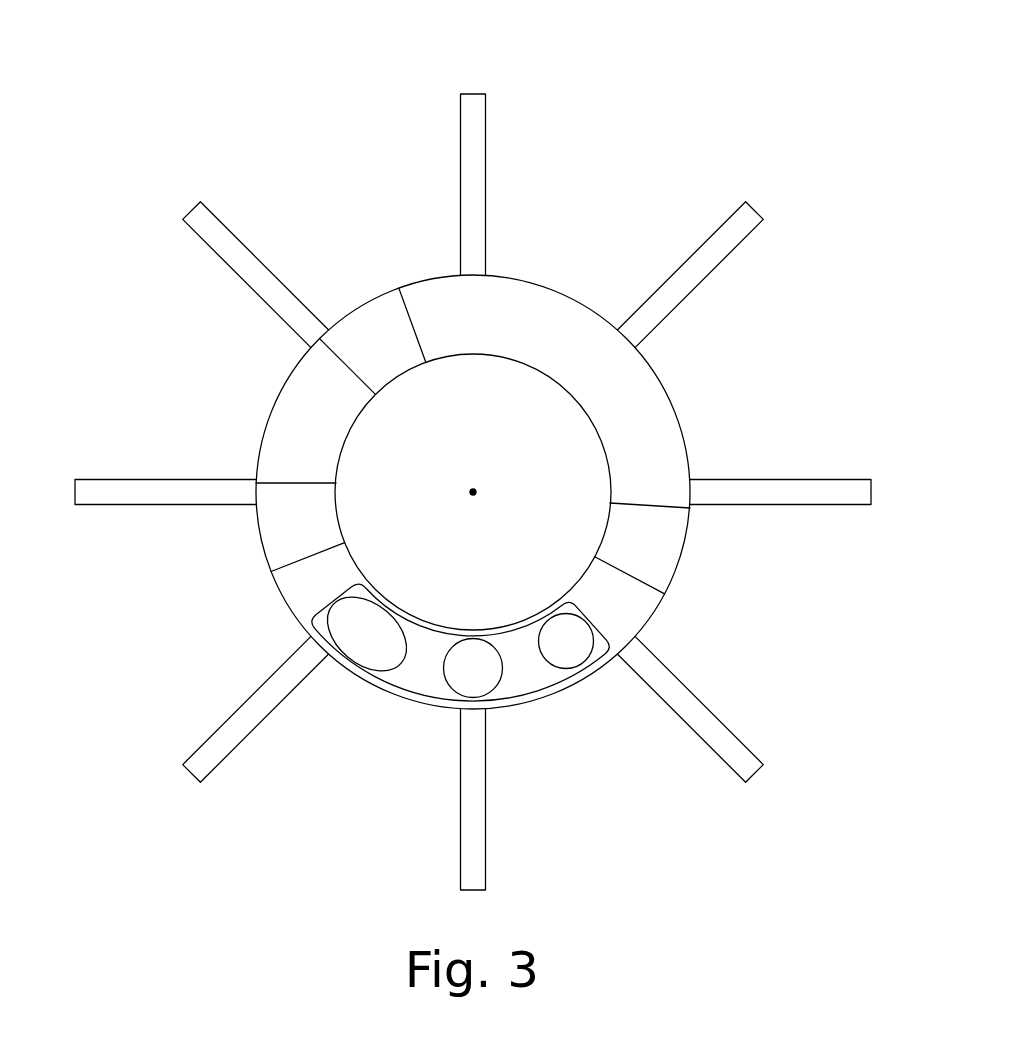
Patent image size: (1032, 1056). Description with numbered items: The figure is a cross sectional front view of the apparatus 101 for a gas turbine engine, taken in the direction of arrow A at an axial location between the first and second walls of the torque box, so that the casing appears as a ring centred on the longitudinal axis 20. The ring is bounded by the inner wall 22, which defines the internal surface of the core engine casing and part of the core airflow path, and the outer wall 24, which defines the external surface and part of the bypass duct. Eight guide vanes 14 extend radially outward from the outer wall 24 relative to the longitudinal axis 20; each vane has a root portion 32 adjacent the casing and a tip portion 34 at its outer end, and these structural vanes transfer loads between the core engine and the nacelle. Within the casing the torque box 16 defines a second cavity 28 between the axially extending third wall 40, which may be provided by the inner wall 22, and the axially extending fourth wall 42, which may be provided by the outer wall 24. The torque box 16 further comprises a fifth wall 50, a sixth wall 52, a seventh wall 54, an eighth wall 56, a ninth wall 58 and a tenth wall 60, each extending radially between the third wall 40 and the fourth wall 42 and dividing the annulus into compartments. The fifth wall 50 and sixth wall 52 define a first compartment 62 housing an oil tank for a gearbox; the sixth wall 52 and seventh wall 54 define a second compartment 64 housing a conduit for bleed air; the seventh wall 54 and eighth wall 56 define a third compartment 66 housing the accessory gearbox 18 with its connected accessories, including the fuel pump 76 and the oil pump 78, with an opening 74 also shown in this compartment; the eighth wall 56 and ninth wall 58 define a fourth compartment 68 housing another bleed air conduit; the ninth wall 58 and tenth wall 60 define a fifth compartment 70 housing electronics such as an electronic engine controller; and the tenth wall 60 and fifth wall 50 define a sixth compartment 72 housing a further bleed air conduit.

The apparatus 101 is at (683, 93).
The guide vanes 14 is at (487, 170).
The torque box 16 is at (693, 555).
The accessory gearbox 18 is at (422, 678).
The longitudinal axis 20 is at (474, 497).
The inner wall 22 is at (581, 409).
The outer wall 24 is at (668, 393).
The second cavity 28 is at (565, 318).
The root portion 32 is at (487, 248).
The tip portion 34 is at (476, 93).
The third wall 40 is at (472, 356).
The fourth wall 42 is at (430, 279).
The fifth wall 50 is at (413, 323).
The sixth wall 52 is at (647, 504).
The seventh wall 54 is at (632, 577).
The eighth wall 56 is at (290, 565).
The ninth wall 58 is at (280, 485).
The tenth wall 60 is at (350, 366).
The first compartment 62 is at (616, 388).
The second compartment 64 is at (658, 556).
The third compartment 66 is at (611, 640).
The fourth compartment 68 is at (314, 533).
The fifth compartment 70 is at (316, 459).
The sixth compartment 72 is at (394, 361).
The elongated opening 74 is at (358, 647).
The fuel pump 76 is at (482, 676).
The oil pump 78 is at (573, 658).